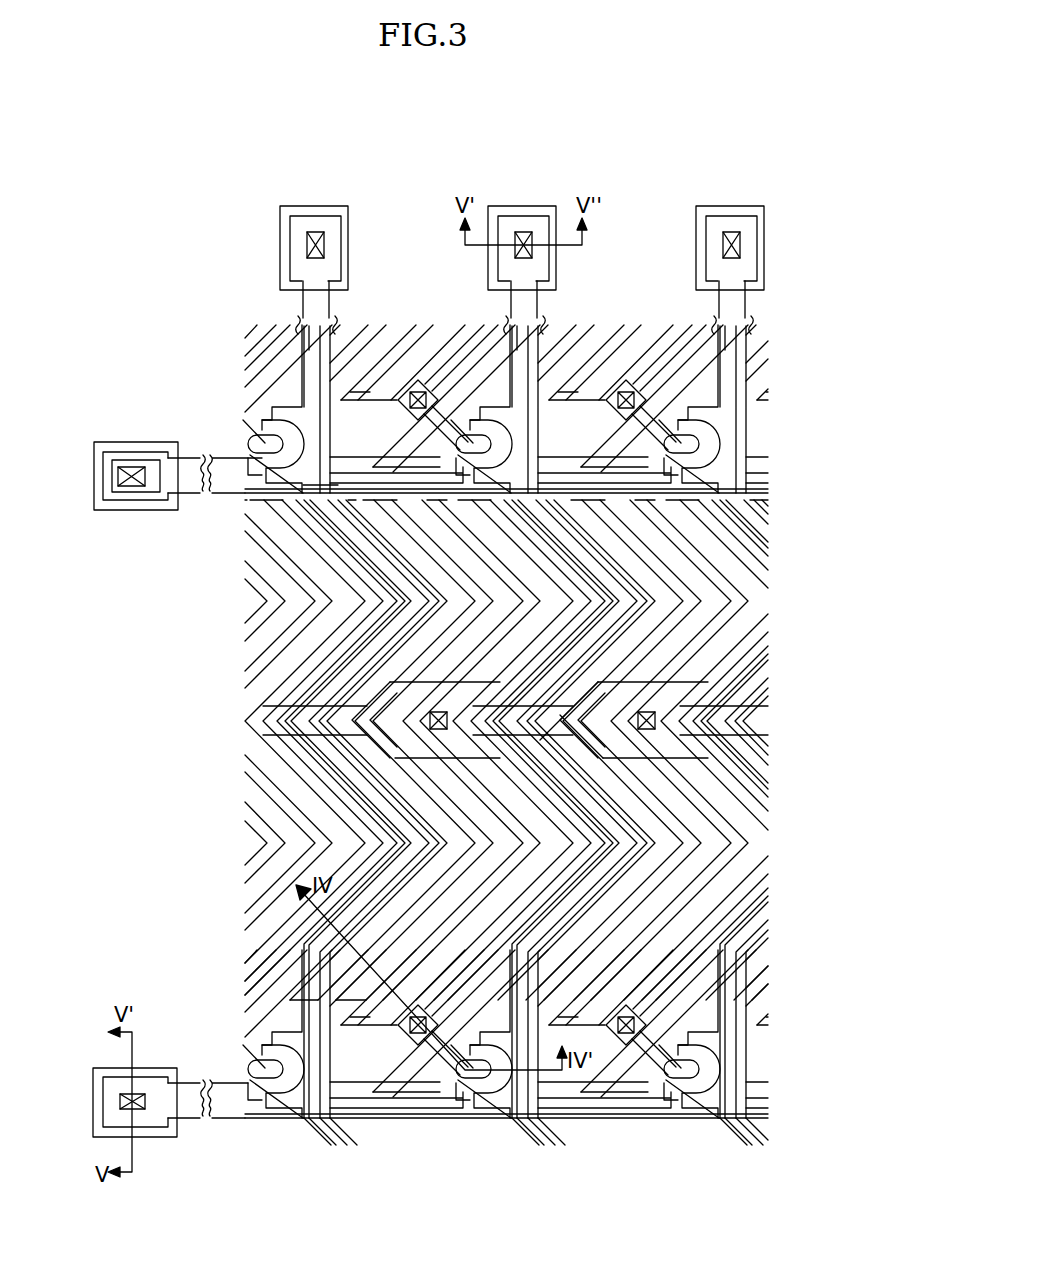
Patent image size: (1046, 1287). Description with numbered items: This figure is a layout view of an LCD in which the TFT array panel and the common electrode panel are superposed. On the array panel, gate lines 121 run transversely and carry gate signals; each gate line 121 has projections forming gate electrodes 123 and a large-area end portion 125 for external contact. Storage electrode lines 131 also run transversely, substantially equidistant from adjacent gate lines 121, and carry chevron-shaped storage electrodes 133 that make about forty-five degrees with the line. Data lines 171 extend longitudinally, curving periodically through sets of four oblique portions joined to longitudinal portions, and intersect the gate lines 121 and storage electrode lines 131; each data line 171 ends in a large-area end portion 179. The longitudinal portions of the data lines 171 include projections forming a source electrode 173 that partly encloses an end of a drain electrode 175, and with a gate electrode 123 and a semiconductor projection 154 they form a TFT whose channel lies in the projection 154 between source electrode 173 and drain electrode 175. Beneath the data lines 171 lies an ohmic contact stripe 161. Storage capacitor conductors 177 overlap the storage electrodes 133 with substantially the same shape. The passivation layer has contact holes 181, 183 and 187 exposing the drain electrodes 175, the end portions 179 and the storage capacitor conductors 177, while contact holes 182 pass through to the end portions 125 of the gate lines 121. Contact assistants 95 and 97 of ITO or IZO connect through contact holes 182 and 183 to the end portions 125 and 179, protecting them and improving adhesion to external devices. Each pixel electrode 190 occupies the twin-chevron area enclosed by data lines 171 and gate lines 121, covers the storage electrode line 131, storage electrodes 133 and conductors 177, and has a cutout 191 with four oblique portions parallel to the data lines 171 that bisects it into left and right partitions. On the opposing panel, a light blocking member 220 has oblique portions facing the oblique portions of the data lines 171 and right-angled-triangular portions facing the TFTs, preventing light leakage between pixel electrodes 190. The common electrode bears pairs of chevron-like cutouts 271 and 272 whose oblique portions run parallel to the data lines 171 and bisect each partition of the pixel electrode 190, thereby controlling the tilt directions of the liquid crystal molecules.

The contact assistant 95 is at (93, 1103).
The contact assistant 97 is at (560, 283).
The gate line 121 is at (407, 1122).
The gate electrode 123 is at (460, 1110).
The end portion of gate line 125 is at (157, 1137).
The storage electrode line 131 is at (763, 706).
The storage electrode 133 is at (700, 700).
The projection of semiconductor stripe 154 is at (463, 1107).
The ohmic contact stripe 161 is at (330, 495).
The data line 171 is at (345, 553).
The source electrode 173 is at (497, 1047).
The drain electrode 175 is at (330, 1128).
The storage capacitor conductor 177 is at (693, 683).
The end portion of data line 179 is at (555, 255).
The contact hole 181 is at (397, 1033).
The contact hole 182 is at (121, 1090).
The contact hole 183 is at (523, 228).
The contact hole 187 is at (657, 721).
The pixel electrode 190 is at (341, 567).
The cutout 191 is at (470, 948).
The light blocking member 220 is at (445, 1065).
The cutout 271 is at (463, 950).
The cutout 272 is at (345, 1129).